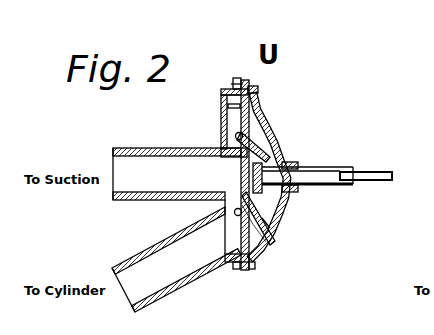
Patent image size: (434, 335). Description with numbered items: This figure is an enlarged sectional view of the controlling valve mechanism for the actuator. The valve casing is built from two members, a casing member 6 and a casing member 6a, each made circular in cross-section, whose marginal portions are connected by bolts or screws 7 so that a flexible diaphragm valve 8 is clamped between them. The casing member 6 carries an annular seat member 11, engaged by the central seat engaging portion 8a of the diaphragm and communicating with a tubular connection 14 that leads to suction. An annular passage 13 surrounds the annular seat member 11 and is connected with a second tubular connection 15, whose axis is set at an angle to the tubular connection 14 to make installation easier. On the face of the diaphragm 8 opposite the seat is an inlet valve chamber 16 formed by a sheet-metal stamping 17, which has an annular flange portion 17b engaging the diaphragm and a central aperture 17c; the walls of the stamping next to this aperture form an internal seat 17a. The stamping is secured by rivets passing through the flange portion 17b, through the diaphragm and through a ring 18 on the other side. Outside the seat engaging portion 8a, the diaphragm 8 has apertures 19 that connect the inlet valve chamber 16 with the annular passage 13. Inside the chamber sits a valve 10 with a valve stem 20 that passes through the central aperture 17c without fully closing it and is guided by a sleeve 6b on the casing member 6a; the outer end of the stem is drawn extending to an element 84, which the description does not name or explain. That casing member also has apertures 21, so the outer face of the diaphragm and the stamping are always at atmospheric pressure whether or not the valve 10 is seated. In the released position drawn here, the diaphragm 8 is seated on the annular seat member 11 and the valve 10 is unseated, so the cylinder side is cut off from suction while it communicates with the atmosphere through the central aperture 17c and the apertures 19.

The casing member 6 is at (225, 90).
The casing member 6a is at (262, 112).
The sleeve 6b is at (290, 189).
The bolts or screws 7 is at (237, 78).
The flexible diaphragm valve 8 is at (222, 108).
The seat engaging portion 8a is at (223, 148).
The valve 10 is at (276, 205).
The annular seat member 11 is at (229, 128).
The annular passage 13 is at (215, 265).
The tubular connection 14 is at (160, 164).
The second tubular connection 15 is at (160, 259).
The inlet valve chamber 16 is at (272, 230).
The stamping 17 is at (259, 143).
The internal seat 17a is at (291, 152).
The annular flange portion 17b is at (262, 243).
The central aperture 17c is at (291, 165).
The ring 18 is at (246, 222).
The apertures 19 is at (232, 209).
The valve stem 20 is at (337, 168).
The apertures 21 is at (279, 140).
The rod 84 is at (370, 173).